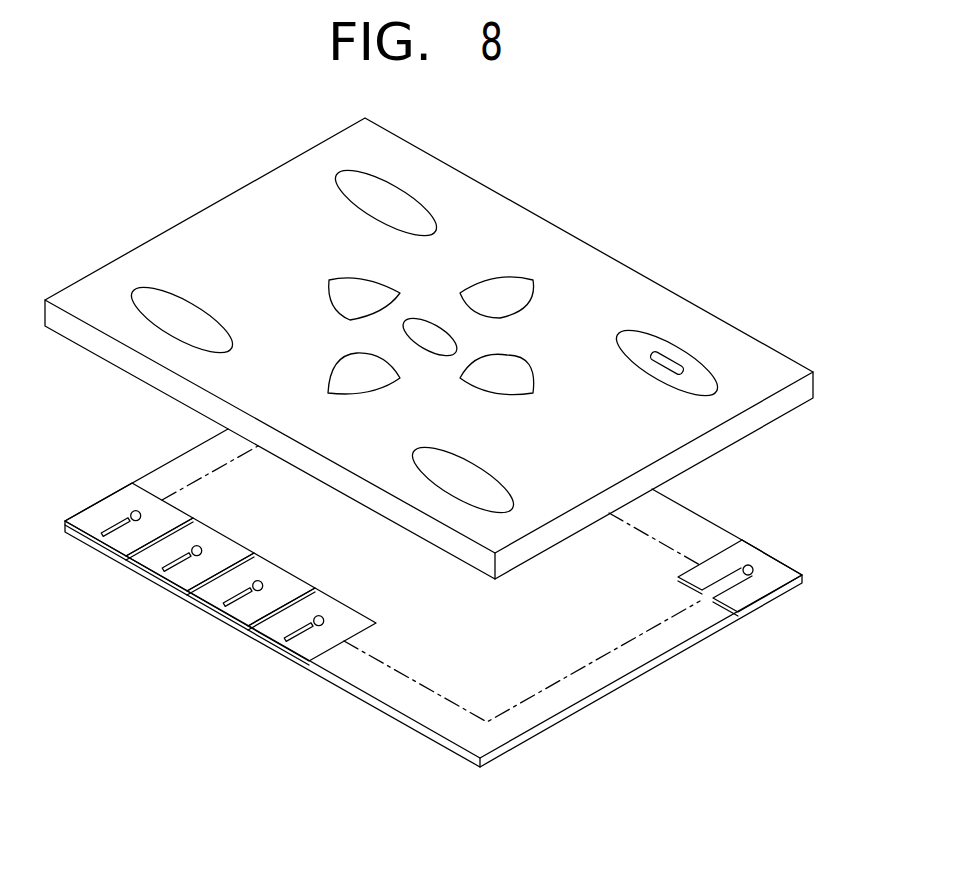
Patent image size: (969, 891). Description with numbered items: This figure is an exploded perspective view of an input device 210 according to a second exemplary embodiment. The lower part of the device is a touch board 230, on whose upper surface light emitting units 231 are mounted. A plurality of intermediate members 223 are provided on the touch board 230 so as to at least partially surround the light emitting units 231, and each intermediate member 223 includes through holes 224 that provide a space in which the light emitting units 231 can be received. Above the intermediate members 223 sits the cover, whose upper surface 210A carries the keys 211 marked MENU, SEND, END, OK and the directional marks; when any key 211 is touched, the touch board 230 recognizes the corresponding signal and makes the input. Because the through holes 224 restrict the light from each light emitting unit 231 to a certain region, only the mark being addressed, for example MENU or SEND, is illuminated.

The input device 210 is at (178, 190).
The upper surface of key pad 210A is at (801, 366).
The key 211 is at (518, 282).
The intermediate member 223 is at (77, 521).
The through hole 224 is at (293, 640).
The touch board 230 is at (415, 708).
The light emitting unit 231 is at (129, 519).